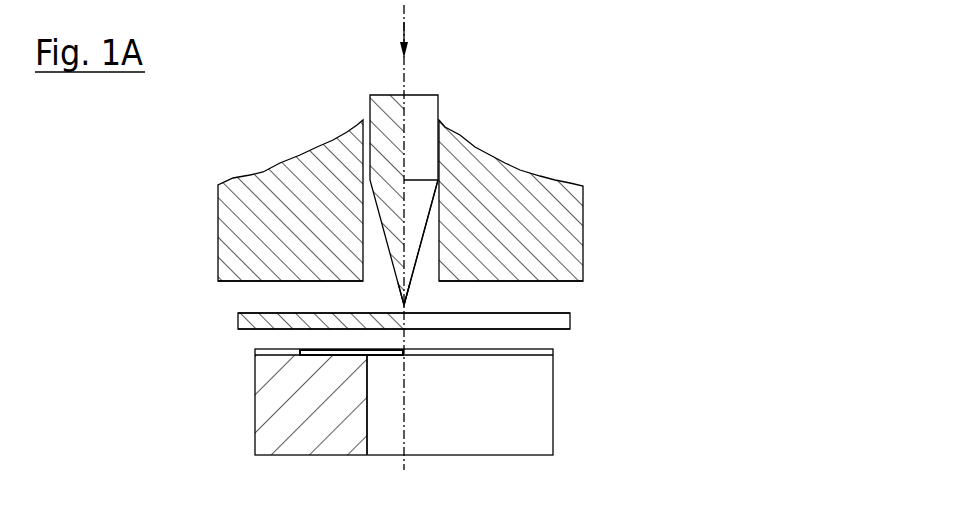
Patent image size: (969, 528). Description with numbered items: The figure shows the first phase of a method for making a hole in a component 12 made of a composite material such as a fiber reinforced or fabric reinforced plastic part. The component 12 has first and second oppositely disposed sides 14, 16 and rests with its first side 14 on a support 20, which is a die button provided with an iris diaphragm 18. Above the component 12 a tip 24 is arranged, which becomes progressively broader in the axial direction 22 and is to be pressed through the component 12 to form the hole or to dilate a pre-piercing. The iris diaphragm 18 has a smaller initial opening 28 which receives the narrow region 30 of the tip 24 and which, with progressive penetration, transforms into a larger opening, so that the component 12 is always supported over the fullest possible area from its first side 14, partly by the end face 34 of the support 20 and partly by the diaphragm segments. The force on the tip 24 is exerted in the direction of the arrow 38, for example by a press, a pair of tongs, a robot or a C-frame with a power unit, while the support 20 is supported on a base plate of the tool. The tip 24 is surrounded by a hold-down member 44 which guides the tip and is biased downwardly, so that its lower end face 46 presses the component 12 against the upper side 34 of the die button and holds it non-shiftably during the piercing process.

The component 12 is at (497, 317).
The first side 14 is at (248, 331).
The second side 16 is at (285, 313).
The iris diaphragm 18 is at (383, 356).
The support 20 is at (535, 423).
The axial direction 22 is at (405, 78).
The tip 24 is at (420, 245).
The smaller opening 28 is at (423, 354).
The narrow region 30 is at (400, 292).
The end face 34 is at (546, 344).
The arrow direction 38 is at (403, 25).
The hold-down member 44 is at (230, 234).
The lower end face 46 is at (250, 283).